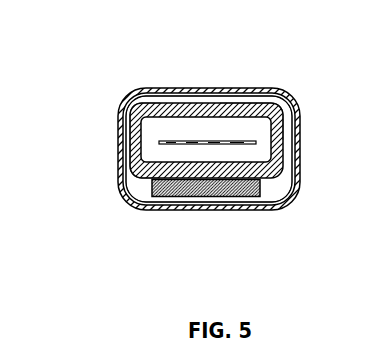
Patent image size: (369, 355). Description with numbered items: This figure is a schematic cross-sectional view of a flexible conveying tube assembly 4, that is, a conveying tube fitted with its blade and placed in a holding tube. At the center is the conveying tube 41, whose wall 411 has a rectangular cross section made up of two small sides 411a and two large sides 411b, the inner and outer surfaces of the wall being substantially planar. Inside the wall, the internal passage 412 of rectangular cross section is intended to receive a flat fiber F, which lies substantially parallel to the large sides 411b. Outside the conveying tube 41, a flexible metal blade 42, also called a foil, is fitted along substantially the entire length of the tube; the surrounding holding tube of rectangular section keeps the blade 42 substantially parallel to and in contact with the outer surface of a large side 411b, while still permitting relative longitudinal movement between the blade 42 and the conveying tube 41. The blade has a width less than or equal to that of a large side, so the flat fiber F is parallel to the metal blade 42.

The conveying tube fitted with its blade and placed in the holding tube 4 is at (131, 93).
The conveying tube 41 is at (159, 100).
The wall 411 is at (155, 155).
The small sides 411a is at (133, 127).
The large sides 411b is at (258, 108).
The internal passage 412 is at (140, 168).
The flat fiber F is at (207, 141).
The flexible metal blade 42 is at (192, 191).